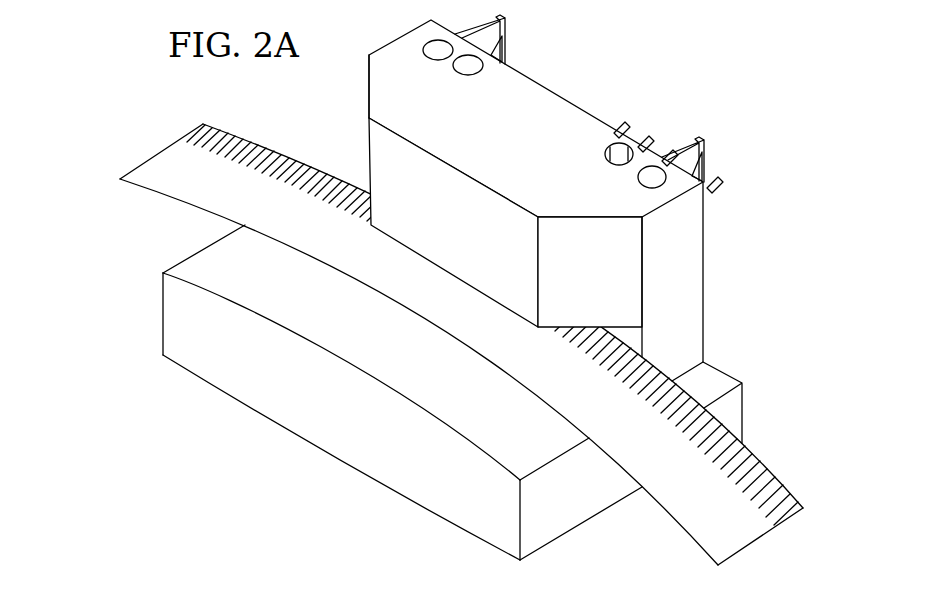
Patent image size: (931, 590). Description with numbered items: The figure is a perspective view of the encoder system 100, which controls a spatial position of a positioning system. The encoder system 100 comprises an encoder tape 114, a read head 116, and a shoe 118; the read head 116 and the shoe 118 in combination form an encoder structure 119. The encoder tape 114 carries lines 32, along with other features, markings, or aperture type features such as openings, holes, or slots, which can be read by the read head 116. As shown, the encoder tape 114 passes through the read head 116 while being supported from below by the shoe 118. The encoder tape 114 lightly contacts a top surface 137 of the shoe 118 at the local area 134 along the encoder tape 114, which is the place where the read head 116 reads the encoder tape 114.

The encoder system 100 is at (762, 94).
The read head 116 is at (705, 262).
The shoe 118 is at (402, 392).
The top surface 137 is at (522, 434).
The lines 32 is at (487, 339).
The local area 134 is at (397, 270).
The encoder tape 114 is at (758, 520).
The encoder structure 119 is at (332, 138).